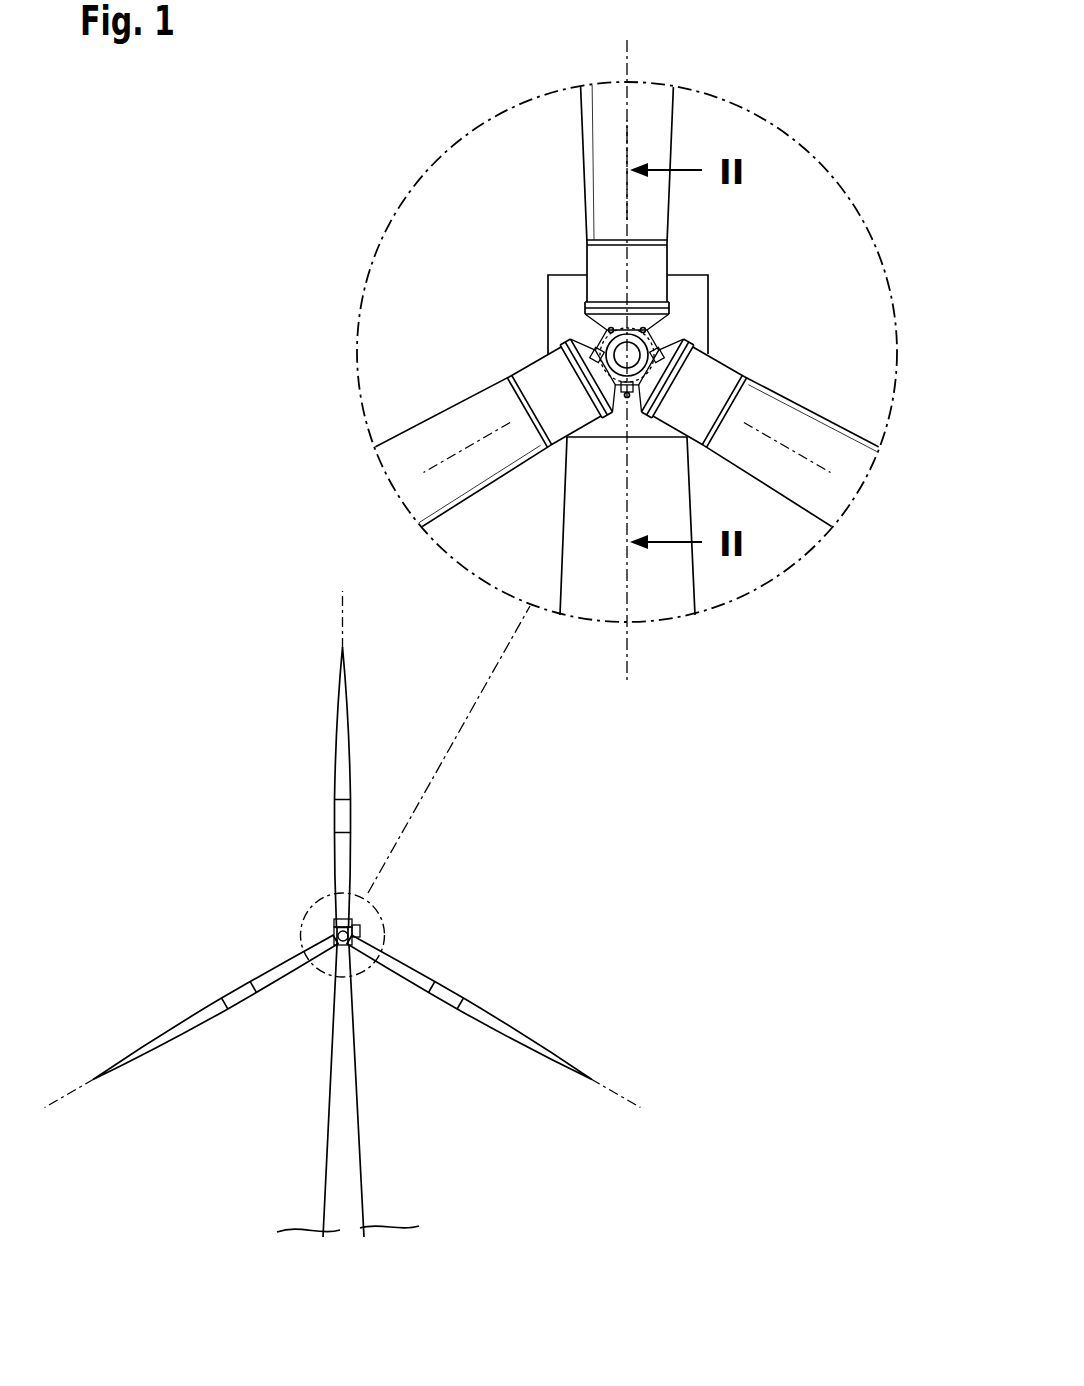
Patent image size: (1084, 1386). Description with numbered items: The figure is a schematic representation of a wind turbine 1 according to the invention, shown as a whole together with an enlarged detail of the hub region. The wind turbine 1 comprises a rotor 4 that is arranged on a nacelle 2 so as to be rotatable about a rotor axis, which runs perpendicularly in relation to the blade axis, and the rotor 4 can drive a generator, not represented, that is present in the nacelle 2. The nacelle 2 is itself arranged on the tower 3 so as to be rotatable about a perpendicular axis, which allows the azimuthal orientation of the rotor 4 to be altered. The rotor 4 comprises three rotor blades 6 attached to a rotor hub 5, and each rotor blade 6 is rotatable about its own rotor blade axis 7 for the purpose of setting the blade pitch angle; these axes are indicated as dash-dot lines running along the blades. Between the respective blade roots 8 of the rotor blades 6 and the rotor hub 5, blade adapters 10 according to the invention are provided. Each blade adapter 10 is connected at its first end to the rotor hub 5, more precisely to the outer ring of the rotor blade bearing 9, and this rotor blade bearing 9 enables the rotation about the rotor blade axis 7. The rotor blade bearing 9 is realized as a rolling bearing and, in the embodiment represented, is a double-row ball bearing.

The wind turbine 1 is at (164, 773).
The nacelle 2 is at (354, 928).
The tower 3 is at (349, 1166).
The rotor 4 is at (205, 850).
The rotor hub 5 is at (318, 936).
The rotor blade 6 is at (338, 702).
The rotor blade axis 7 is at (342, 602).
The blade root 8 is at (362, 905).
The rotor blade bearing 9 is at (675, 333).
The blade adapter 10 is at (326, 923).